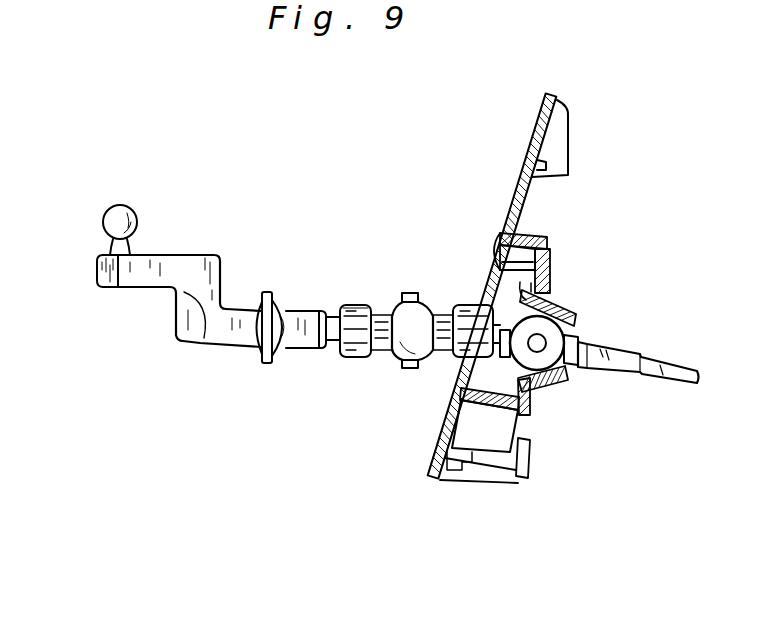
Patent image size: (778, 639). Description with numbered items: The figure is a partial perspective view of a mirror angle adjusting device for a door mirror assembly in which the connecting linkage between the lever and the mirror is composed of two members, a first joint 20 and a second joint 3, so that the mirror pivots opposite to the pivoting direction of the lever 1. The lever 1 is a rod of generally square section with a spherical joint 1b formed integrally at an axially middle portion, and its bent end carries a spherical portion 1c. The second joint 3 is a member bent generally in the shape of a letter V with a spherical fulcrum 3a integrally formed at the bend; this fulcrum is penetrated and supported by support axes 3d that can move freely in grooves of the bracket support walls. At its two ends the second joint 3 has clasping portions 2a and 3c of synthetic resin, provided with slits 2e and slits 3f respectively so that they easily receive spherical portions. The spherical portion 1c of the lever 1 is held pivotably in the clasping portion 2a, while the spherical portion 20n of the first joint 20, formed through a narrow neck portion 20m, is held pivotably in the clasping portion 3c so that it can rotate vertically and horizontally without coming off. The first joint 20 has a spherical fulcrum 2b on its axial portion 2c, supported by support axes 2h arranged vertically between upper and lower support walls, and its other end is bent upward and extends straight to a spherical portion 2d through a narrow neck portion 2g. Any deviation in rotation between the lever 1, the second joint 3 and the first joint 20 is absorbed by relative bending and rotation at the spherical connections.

The lever 1 is at (624, 325).
The spherical joint 1b is at (557, 310).
The spherical portion 1c is at (486, 300).
The clasping portion 2a is at (463, 305).
The spherical fulcrum 2b is at (279, 350).
The axial portion 2c is at (198, 346).
The spherical portion 2d is at (118, 205).
The slits 2e is at (468, 356).
The narrow neck portion 2g is at (113, 243).
The support axes 2h is at (267, 292).
The second joint 3 is at (400, 268).
The spherical fulcrum 3a is at (400, 358).
The clasping portion 3c is at (360, 304).
The support axes 3d is at (405, 292).
The slits 3f is at (343, 302).
The first joint 20 is at (203, 240).
The narrow neck portion 20m is at (333, 345).
The spherical portion 20n is at (337, 358).